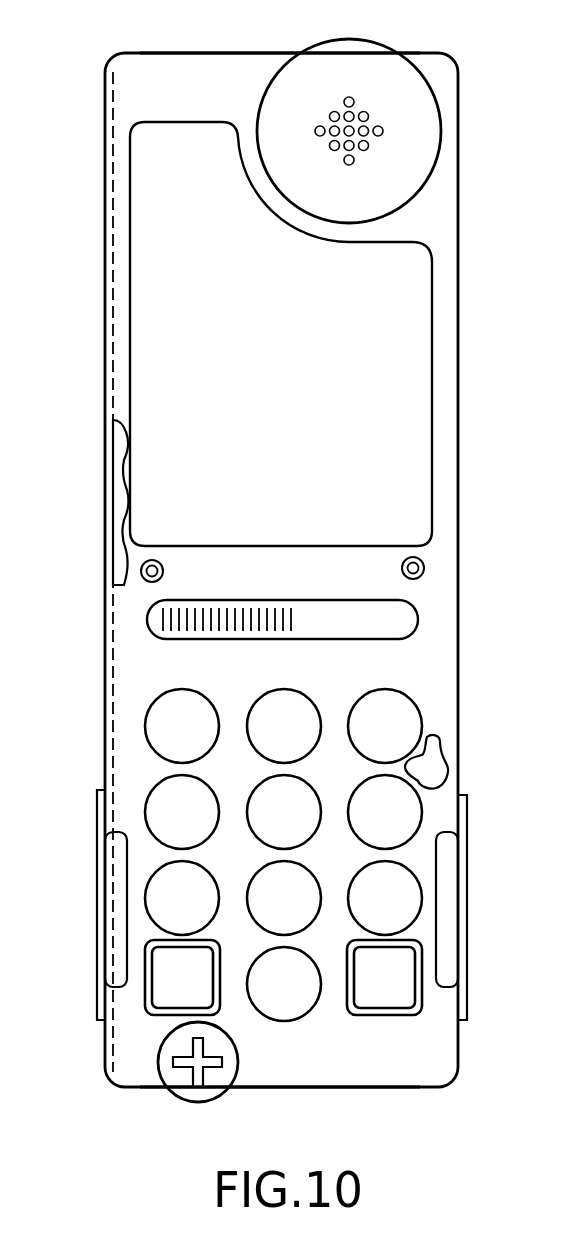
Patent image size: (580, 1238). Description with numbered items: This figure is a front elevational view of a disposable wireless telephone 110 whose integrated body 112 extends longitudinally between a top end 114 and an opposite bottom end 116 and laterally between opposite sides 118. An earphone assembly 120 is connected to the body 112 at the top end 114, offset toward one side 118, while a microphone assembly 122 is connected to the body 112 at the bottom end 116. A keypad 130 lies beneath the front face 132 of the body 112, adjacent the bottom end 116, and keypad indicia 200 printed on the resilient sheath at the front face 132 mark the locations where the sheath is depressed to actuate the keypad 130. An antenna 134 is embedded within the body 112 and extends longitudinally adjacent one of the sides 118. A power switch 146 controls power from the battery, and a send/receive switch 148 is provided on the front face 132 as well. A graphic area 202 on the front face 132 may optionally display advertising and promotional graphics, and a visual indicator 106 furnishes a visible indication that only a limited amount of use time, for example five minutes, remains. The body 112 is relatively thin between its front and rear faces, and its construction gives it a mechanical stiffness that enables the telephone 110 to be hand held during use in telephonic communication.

The disposable wireless telephone 110 is at (453, 53).
The integrated body 112 is at (447, 218).
The top end 114 is at (150, 54).
The bottom end 116 is at (375, 1088).
The sides 118 is at (105, 746).
The earphone assembly 120 is at (346, 40).
The microphone assembly 122 is at (200, 1103).
The keypad 130 is at (437, 771).
The front face 132 is at (307, 671).
The antenna 134 is at (114, 483).
The power switch 146 is at (150, 583).
The send/receive switch 148 is at (423, 563).
The keypad indicia 200 is at (410, 708).
The graphic area 202 is at (420, 380).
The visual indicator 106 is at (360, 600).